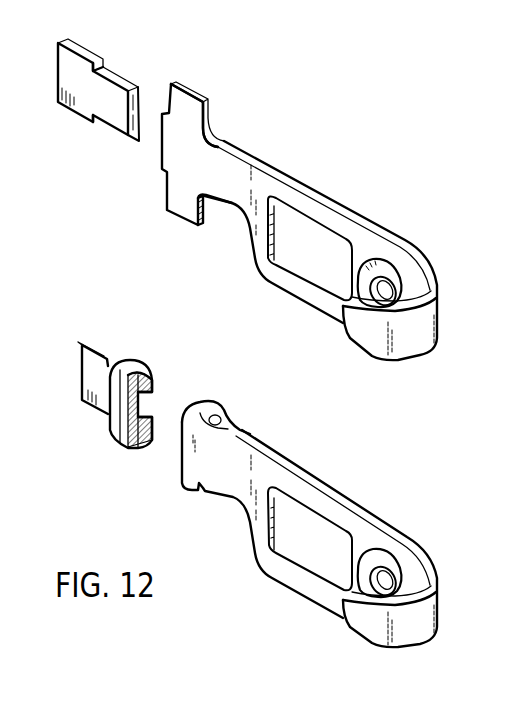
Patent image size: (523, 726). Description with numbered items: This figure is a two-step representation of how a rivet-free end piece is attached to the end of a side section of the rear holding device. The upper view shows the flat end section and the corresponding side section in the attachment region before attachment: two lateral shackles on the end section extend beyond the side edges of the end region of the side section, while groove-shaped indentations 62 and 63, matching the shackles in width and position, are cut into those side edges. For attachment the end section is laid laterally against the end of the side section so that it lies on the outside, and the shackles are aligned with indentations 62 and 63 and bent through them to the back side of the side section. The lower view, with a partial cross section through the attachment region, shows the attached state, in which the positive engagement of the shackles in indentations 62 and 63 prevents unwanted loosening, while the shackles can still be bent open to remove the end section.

The indentation 62 is at (120, 80).
The indentation 63 is at (120, 128).